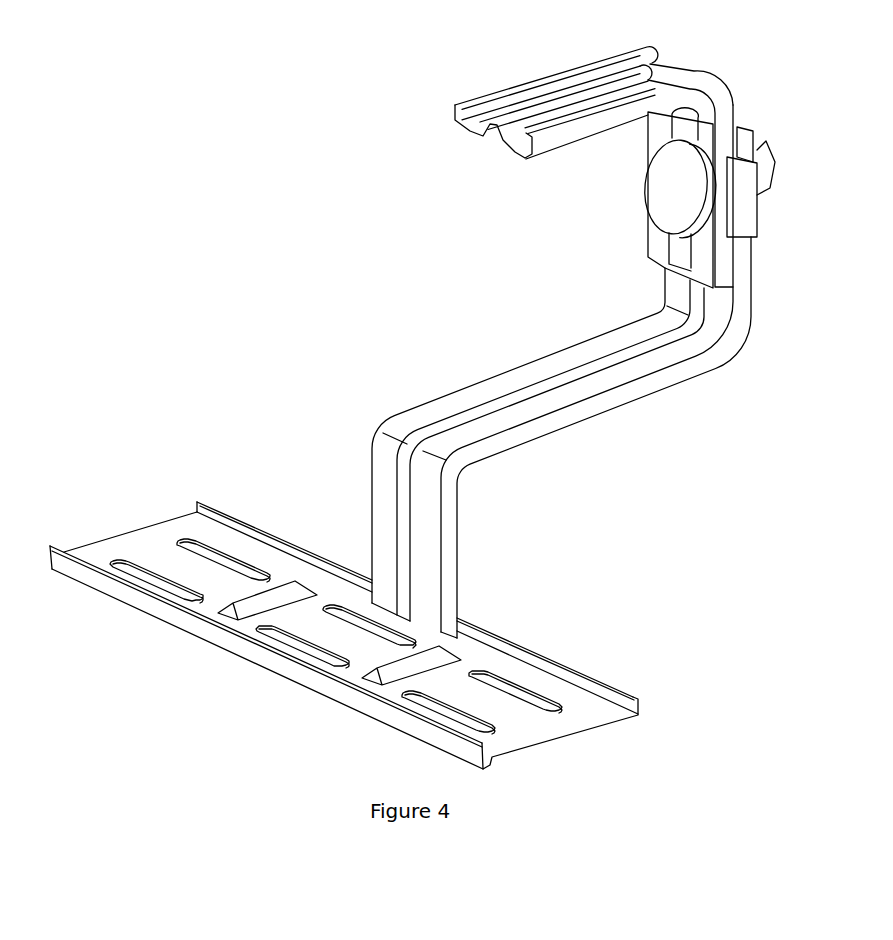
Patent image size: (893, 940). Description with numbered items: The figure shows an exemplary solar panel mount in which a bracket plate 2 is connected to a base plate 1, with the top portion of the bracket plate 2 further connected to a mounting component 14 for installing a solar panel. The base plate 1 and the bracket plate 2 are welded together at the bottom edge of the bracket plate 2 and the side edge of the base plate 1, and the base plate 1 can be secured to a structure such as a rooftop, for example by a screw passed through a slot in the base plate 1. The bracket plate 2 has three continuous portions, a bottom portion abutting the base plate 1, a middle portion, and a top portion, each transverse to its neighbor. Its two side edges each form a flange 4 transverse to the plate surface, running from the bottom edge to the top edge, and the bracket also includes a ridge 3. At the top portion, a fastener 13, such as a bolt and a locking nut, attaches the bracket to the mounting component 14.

The base plate 1 is at (233, 682).
The bracket plate 2 is at (513, 348).
The ridge 3 is at (508, 398).
The flange 4 is at (620, 395).
The fastener 13 is at (678, 182).
The mounting component 14 is at (457, 132).